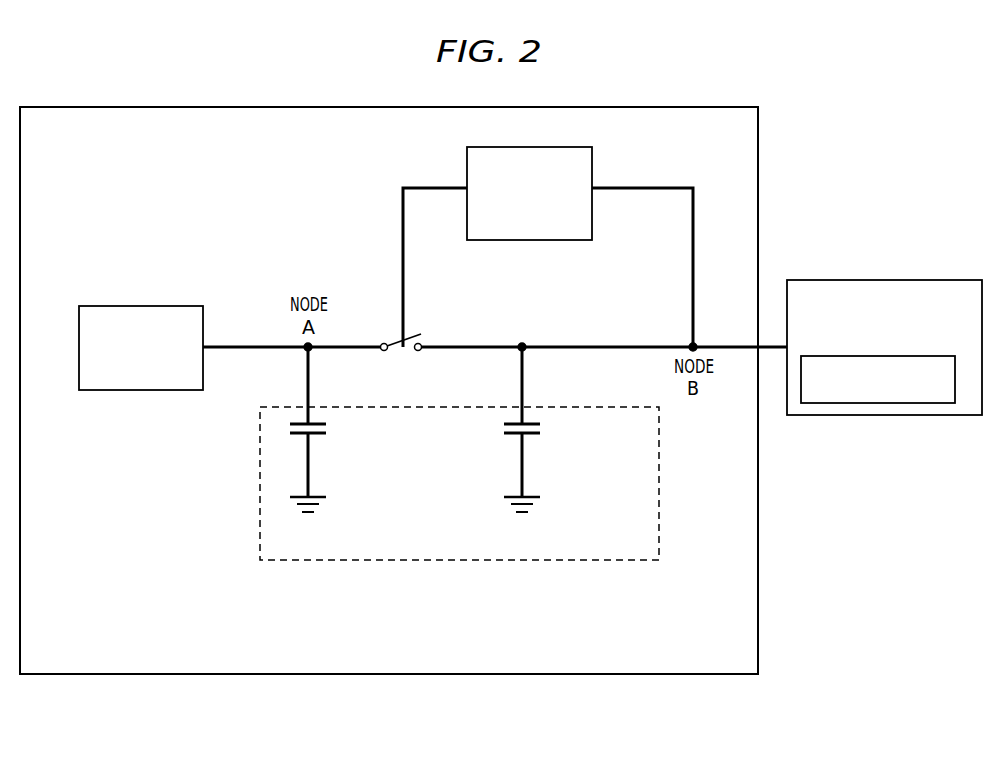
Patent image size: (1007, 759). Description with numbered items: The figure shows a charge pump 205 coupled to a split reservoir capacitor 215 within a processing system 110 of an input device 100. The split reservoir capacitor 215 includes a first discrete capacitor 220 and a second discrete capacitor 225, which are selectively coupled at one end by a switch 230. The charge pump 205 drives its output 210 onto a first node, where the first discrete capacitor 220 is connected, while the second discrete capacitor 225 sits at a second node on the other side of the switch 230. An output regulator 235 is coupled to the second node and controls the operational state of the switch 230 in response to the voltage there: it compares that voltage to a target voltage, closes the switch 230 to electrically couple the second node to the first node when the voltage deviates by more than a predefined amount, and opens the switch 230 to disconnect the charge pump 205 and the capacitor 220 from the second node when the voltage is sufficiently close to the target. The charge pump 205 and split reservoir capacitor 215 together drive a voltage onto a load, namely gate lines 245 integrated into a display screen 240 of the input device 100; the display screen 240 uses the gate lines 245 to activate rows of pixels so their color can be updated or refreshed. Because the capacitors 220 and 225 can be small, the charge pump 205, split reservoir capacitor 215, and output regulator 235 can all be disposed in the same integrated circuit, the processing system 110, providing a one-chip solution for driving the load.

The input device 100 is at (898, 528).
The processing system 110 is at (134, 653).
The charge pump 205 is at (197, 381).
The output of the charge pump 210 is at (204, 341).
The split reservoir capacitor 215 is at (453, 561).
The first discrete capacitor 220 is at (316, 435).
The second discrete capacitor 225 is at (530, 435).
The switch 230 is at (422, 341).
The output regulator 235 is at (588, 231).
The display screen 240 is at (961, 333).
The gate lines 245 is at (948, 391).